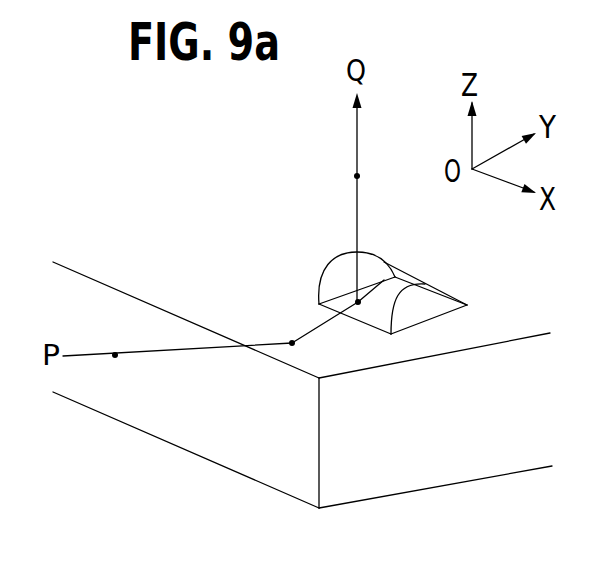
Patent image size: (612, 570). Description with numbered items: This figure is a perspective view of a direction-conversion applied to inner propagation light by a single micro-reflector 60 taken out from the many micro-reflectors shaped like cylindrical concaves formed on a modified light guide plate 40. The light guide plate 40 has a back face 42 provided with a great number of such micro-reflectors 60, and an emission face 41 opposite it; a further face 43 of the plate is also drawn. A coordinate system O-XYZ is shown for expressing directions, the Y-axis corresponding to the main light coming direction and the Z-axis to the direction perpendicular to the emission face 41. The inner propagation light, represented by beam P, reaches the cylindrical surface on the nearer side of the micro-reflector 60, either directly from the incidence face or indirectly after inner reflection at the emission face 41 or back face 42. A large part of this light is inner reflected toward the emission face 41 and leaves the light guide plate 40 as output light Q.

The light guide plate 40 is at (302, 347).
The emission face 41 is at (186, 210).
The back face 42 is at (358, 350).
The side surface 43 is at (232, 456).
The micro-reflector 60 is at (450, 264).